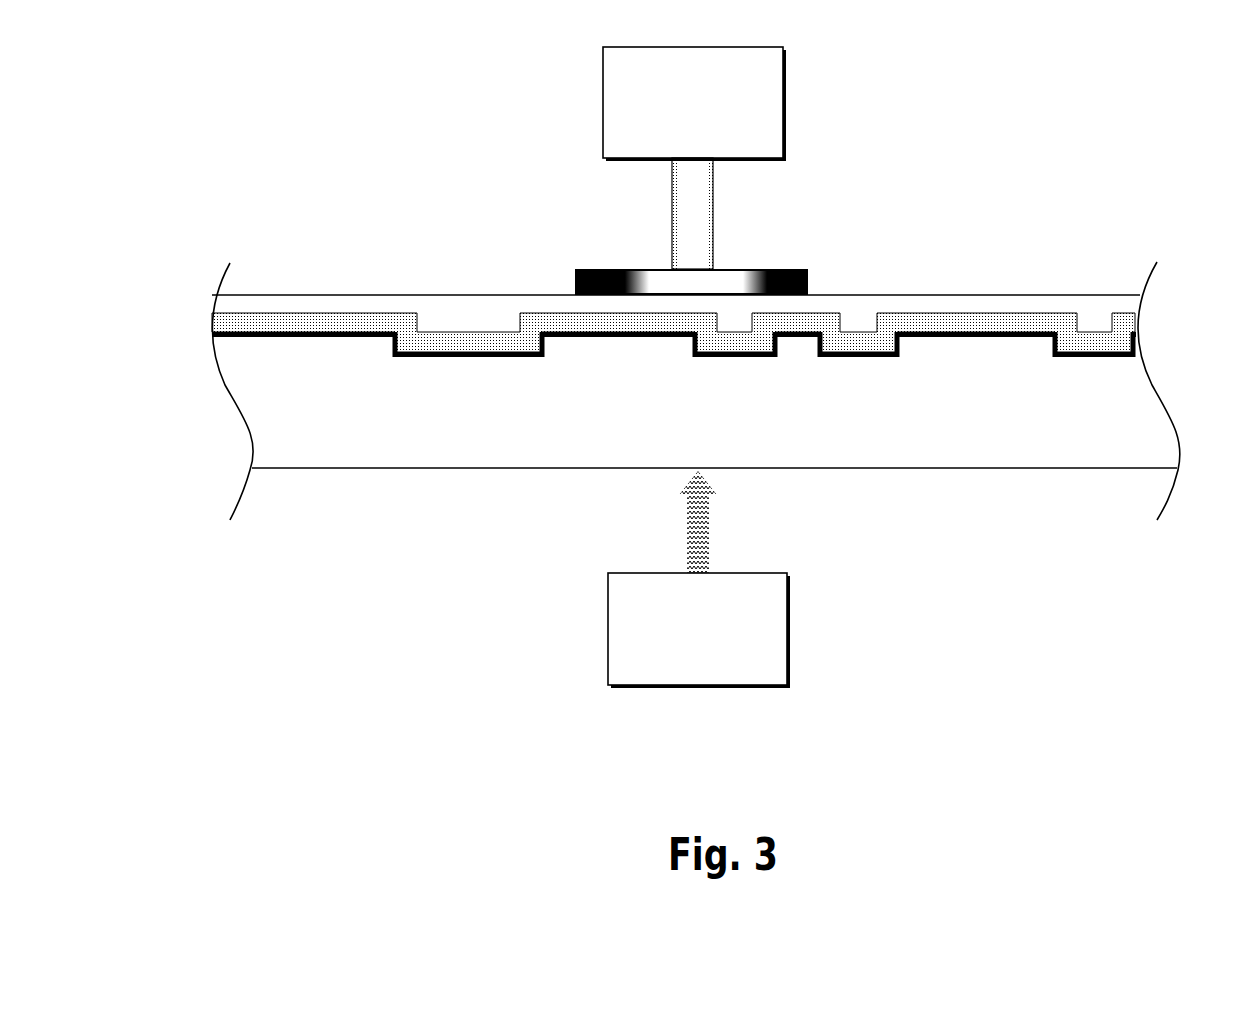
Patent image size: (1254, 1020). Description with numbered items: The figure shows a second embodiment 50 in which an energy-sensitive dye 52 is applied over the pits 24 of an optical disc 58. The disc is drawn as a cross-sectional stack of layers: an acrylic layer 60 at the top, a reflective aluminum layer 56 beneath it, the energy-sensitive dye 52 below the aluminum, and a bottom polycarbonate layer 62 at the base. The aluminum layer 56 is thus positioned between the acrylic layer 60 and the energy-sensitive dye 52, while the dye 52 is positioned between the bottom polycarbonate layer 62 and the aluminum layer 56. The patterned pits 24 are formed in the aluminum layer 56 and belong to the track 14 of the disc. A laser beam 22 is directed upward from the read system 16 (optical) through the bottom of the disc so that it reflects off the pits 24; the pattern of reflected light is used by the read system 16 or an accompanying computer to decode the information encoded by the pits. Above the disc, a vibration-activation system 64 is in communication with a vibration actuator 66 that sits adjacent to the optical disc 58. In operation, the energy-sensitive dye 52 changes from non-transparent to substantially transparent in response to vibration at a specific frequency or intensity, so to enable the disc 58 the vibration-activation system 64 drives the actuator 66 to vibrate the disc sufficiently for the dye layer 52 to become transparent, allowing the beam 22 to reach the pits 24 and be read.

The second embodiment 50 is at (687, 353).
The vibration-activation system 64 is at (603, 82).
The vibration actuator 66 is at (570, 271).
The track 14 is at (444, 305).
The pits 24 is at (858, 326).
The acrylic layer 60 is at (218, 303).
The reflective aluminum layer 56 is at (218, 326).
The energy-sensitive dye 52 is at (213, 337).
The optical disc 58 is at (1158, 376).
The bottom polycarbonate layer 62 is at (260, 422).
The laser beam 22 is at (687, 508).
The read system 16 is at (608, 604).